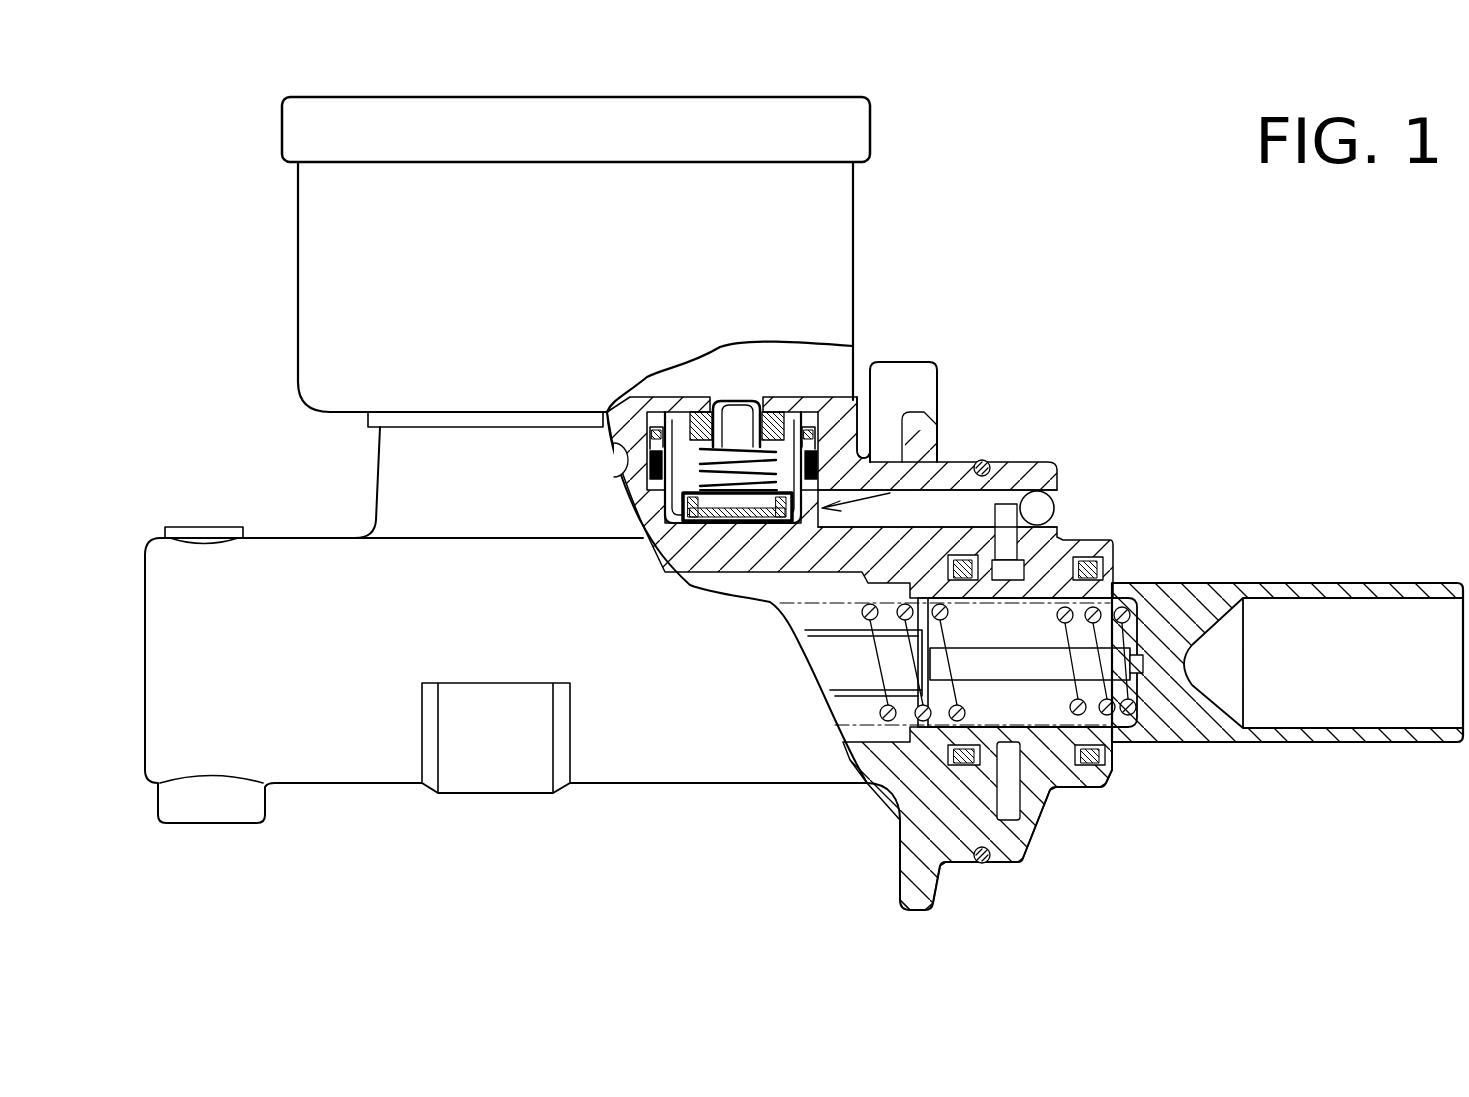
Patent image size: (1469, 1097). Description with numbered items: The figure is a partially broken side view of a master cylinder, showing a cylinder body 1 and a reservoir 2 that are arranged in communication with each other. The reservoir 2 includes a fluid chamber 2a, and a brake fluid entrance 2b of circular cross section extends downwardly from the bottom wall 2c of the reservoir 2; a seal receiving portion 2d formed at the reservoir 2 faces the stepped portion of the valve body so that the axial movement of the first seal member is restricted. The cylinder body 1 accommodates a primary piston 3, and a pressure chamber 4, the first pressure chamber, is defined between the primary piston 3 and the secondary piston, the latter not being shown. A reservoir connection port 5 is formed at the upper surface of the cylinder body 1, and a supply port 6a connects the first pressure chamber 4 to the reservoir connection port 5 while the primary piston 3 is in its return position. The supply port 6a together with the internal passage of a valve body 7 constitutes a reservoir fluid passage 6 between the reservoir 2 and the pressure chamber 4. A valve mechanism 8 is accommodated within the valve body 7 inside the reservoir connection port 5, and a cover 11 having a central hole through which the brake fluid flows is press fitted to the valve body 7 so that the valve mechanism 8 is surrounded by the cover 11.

The cylinder body 1 is at (402, 478).
The reservoir 2 is at (842, 213).
The fluid chamber 2a is at (813, 362).
The brake fluid entrance 2b is at (845, 405).
The bottom wall 2c is at (648, 405).
The seal receiving portion 2d is at (703, 408).
The primary piston 3 is at (1173, 603).
The pressure chamber 4 is at (865, 740).
The reservoir connection port 5 is at (663, 551).
The reservoir fluid passage 6 is at (960, 503).
The supply port 6a is at (1032, 465).
The valve body 7 is at (730, 387).
The valve mechanism 8 is at (733, 525).
The cover 11 is at (700, 523).